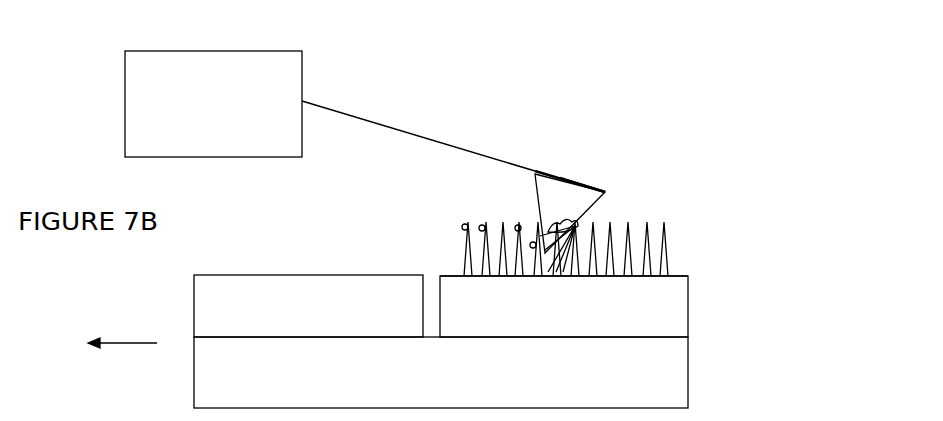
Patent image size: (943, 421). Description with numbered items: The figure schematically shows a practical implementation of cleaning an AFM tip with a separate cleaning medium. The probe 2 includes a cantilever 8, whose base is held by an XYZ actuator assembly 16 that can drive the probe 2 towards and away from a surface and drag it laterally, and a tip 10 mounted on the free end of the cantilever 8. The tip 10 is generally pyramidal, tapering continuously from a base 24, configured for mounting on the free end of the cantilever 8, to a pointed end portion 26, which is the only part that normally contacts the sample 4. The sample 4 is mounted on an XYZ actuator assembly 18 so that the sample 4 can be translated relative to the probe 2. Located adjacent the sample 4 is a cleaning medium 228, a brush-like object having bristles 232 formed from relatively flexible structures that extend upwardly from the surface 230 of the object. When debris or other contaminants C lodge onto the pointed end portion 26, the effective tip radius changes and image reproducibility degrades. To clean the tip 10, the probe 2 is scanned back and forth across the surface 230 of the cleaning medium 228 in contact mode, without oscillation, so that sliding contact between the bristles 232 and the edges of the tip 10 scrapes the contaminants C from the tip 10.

The probe 2 is at (456, 166).
The sample 4 is at (194, 303).
The cantilever 8 is at (368, 120).
The tip 10 is at (526, 195).
The XYZ actuator assembly 16 is at (302, 79).
The XYZ actuator assembly 18 is at (194, 372).
The base 24 is at (568, 181).
The pointed end portion 26 is at (570, 250).
The cleaning medium 228 is at (688, 312).
The surface 230 is at (688, 275).
The bristles 232 is at (677, 230).
The contaminants C is at (487, 228).